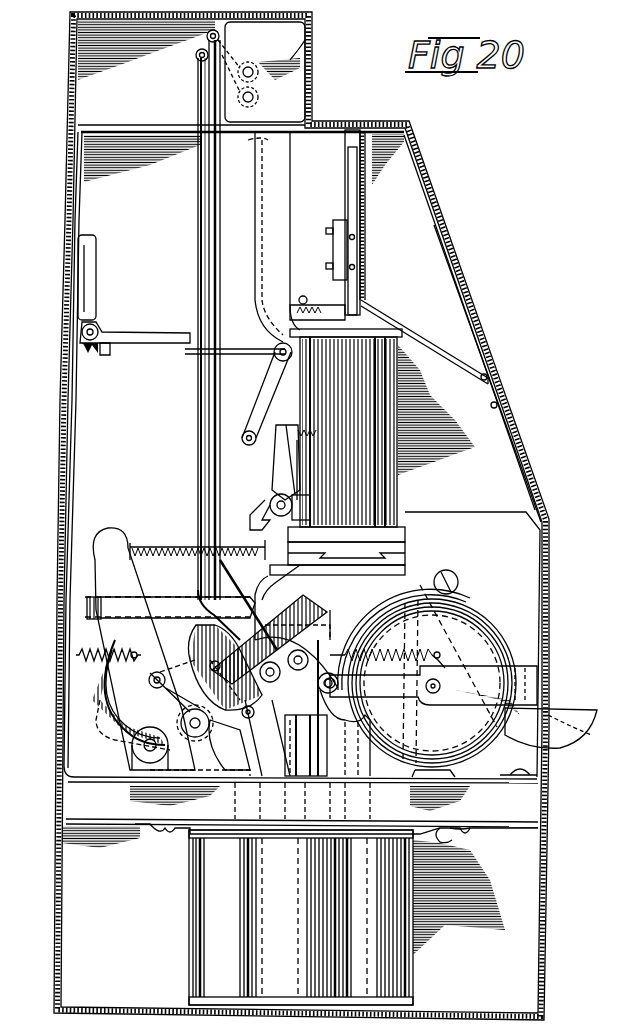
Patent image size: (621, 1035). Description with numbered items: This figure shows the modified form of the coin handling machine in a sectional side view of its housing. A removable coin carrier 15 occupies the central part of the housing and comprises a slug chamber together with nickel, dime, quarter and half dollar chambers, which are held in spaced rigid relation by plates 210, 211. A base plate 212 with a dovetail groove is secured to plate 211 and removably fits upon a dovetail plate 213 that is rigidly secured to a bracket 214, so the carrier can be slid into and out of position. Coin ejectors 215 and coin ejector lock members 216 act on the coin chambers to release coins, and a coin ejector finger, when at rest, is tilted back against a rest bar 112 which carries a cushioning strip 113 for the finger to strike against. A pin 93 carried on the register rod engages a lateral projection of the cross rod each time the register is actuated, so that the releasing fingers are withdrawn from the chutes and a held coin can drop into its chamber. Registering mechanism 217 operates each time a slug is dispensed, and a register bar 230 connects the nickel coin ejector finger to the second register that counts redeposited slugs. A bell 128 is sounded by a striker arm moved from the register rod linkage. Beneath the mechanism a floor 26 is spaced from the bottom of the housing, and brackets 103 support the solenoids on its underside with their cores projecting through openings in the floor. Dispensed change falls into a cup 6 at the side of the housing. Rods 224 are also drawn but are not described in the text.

The registering mechanism 217 is at (300, 50).
The vertical rods 224 is at (212, 286).
The register bar 230 is at (200, 270).
The pin 93 is at (252, 305).
The plate 210 is at (385, 330).
The coin carrier 15 is at (400, 428).
The plate 211 is at (406, 535).
The base plate 212 is at (406, 553).
The dovetail plate 213 is at (404, 570).
The bracket 214 is at (395, 583).
The coin ejector lock member 216 is at (274, 470).
The coin ejector 215 is at (162, 541).
The bell 128 is at (490, 635).
The cup 6 is at (582, 712).
The cushioning strip 113 is at (86, 603).
The rest bar 112 is at (85, 625).
The floor 26 is at (512, 826).
The bracket 103 is at (453, 842).